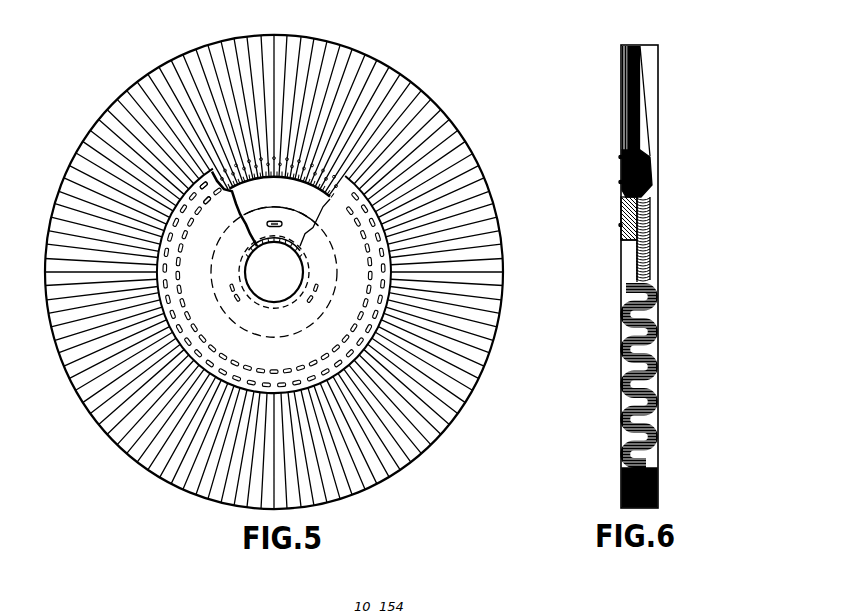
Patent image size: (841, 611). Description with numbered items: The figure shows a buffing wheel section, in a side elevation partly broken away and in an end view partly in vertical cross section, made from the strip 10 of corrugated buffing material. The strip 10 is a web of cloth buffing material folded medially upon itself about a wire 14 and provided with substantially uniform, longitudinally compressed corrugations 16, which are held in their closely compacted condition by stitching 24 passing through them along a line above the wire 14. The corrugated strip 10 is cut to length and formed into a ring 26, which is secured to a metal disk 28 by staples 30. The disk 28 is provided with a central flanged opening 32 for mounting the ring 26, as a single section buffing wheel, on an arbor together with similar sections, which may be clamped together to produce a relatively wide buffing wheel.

In FIG. 5, the strip of corrugated buffing material 10 is at (117, 104).
In FIG. 6, the strip of corrugated buffing material 10 is at (661, 62).
In FIG. 6, the wire 14 is at (655, 195).
In FIG. 6, the corrugations 16 is at (627, 440).
In FIG. 5, the stitching 24 is at (401, 100).
In FIG. 6, the stitching 24 is at (622, 166).
In FIG. 5, the ring 26 is at (243, 50).
In FIG. 6, the ring 26 is at (621, 72).
In FIG. 5, the metal disk 28 is at (150, 272).
In FIG. 6, the metal disk 28 is at (622, 200).
In FIG. 5, the staples 30 is at (184, 208).
In FIG. 6, the staples 30 is at (650, 183).
In FIG. 5, the central flanged opening 32 is at (297, 276).
In FIG. 6, the central flanged opening 32 is at (625, 265).